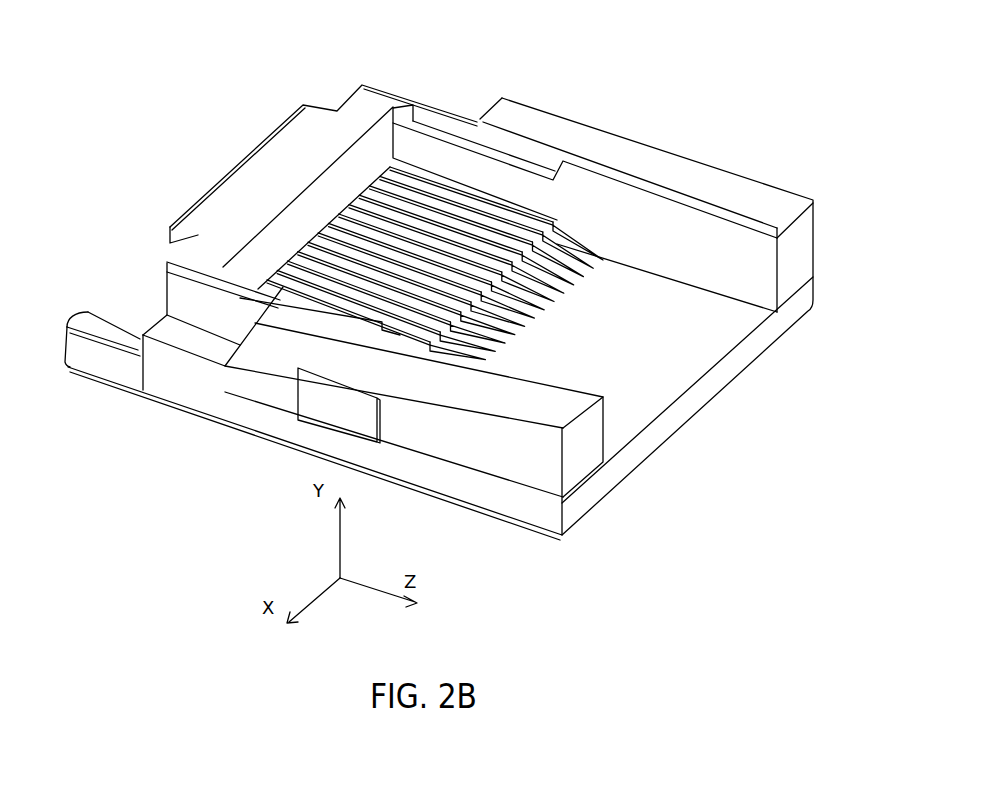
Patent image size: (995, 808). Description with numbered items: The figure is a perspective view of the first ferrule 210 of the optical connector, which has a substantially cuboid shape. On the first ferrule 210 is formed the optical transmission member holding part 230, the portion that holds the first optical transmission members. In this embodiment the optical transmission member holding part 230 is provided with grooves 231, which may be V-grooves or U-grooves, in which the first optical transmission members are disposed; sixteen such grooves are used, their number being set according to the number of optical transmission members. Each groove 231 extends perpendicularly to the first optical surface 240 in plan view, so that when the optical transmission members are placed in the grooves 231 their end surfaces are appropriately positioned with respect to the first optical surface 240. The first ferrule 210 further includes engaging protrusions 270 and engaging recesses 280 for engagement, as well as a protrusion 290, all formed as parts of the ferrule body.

The first ferrule 210 is at (725, 112).
The optical transmission member holding part 230 is at (452, 248).
The grooves 231 is at (545, 309).
The first optical surface 240 is at (303, 215).
The engaging protrusions 270 is at (102, 360).
The engaging recesses 280 is at (195, 336).
The protrusion 290 is at (243, 187).